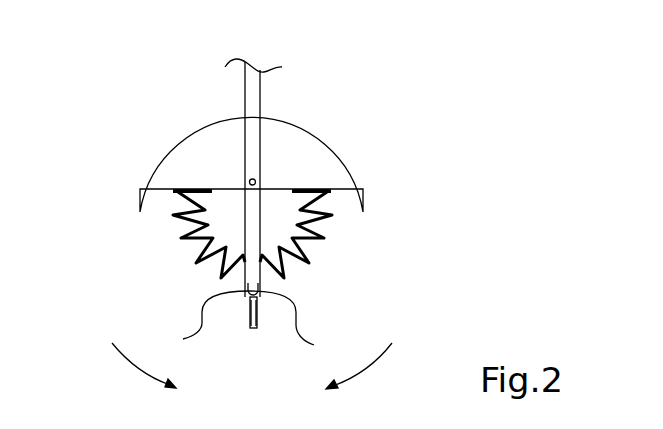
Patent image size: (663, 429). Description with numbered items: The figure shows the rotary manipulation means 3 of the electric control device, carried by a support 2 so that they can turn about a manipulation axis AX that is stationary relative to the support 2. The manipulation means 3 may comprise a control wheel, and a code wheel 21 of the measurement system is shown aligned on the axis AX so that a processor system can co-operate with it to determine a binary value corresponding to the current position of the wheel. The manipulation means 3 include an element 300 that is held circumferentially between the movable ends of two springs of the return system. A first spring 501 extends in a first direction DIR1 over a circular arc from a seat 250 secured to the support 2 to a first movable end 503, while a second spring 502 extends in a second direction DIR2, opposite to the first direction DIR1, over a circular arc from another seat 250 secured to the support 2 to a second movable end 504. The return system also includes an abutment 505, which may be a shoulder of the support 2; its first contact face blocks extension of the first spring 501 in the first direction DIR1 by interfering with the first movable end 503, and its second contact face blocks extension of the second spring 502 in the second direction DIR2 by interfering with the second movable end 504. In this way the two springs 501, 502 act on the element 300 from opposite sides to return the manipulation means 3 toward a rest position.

The support 2 is at (365, 225).
The manipulation means 3 is at (310, 90).
The code wheel 21 is at (245, 100).
The manipulation axis AX is at (256, 182).
The seat 250 is at (168, 189).
The element 300 is at (249, 328).
The first spring 501 is at (200, 248).
The second spring 502 is at (318, 231).
The first movable end 503 is at (183, 339).
The second movable end 504 is at (314, 345).
The abutment 505 is at (257, 318).
The first direction DIR1 is at (124, 370).
The second direction DIR2 is at (378, 370).